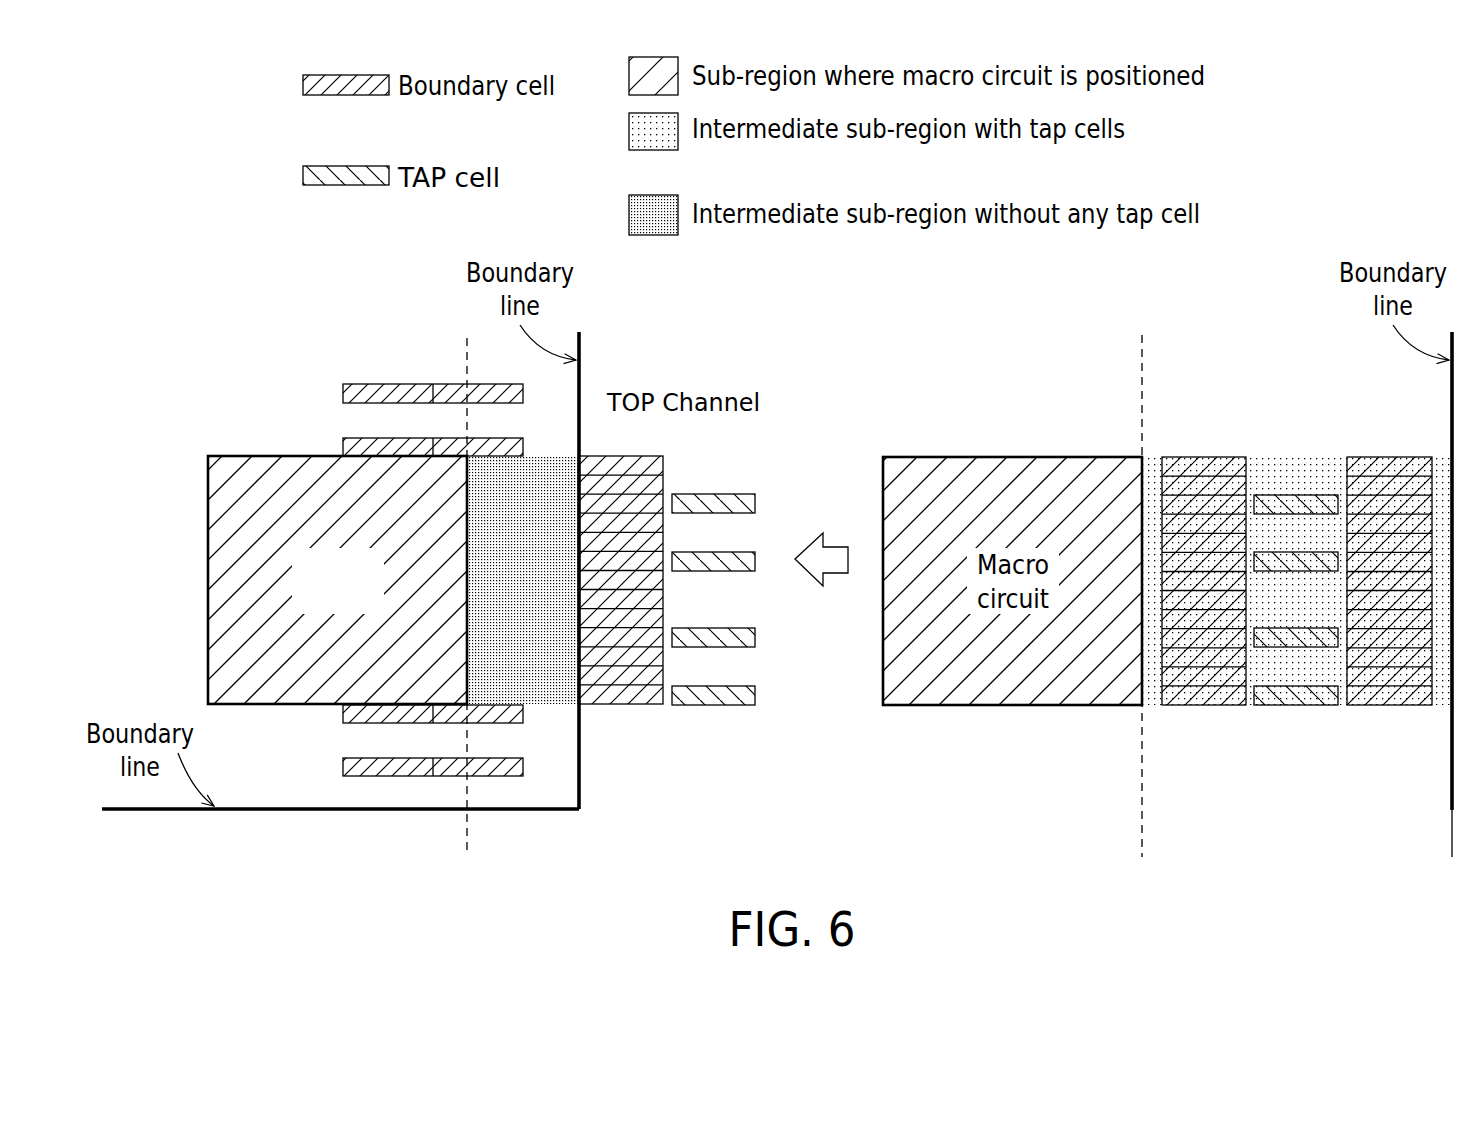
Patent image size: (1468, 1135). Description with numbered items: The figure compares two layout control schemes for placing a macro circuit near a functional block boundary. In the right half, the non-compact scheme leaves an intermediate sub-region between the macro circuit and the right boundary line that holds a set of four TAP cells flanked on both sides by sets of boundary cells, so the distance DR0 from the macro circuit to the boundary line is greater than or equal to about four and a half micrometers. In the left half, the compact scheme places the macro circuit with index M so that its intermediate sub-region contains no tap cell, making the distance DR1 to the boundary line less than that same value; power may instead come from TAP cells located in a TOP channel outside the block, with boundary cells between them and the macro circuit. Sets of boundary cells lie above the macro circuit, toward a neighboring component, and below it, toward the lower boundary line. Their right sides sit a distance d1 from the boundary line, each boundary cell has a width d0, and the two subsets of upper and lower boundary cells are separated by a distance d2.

The distance d1 is at (579, 446).
The width d0 is at (535, 678).
The distance d2 is at (482, 723).
The distance DR1 is at (579, 815).
The distance DR0 is at (1452, 850).